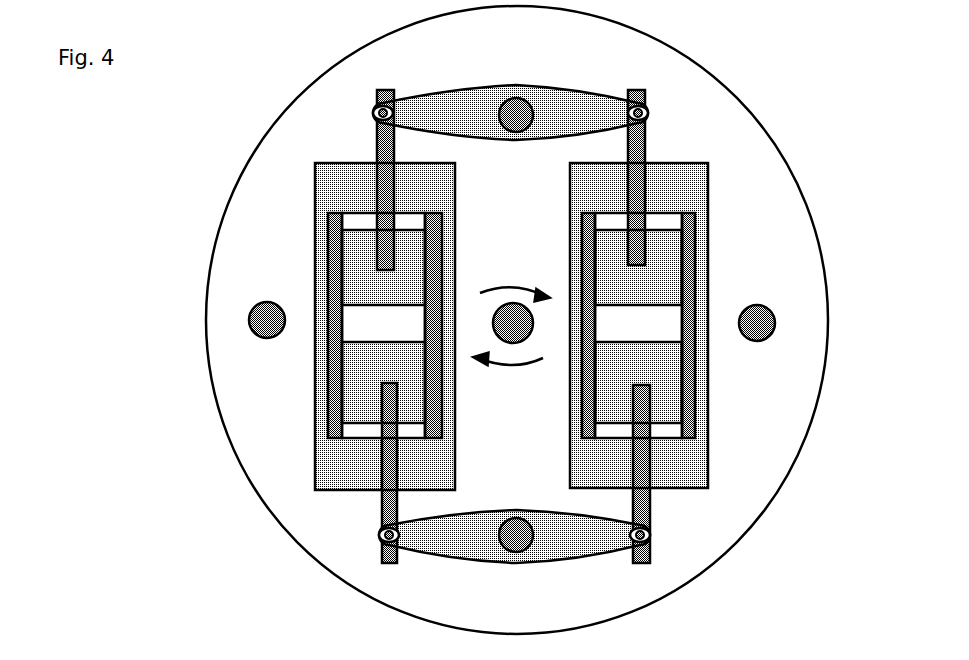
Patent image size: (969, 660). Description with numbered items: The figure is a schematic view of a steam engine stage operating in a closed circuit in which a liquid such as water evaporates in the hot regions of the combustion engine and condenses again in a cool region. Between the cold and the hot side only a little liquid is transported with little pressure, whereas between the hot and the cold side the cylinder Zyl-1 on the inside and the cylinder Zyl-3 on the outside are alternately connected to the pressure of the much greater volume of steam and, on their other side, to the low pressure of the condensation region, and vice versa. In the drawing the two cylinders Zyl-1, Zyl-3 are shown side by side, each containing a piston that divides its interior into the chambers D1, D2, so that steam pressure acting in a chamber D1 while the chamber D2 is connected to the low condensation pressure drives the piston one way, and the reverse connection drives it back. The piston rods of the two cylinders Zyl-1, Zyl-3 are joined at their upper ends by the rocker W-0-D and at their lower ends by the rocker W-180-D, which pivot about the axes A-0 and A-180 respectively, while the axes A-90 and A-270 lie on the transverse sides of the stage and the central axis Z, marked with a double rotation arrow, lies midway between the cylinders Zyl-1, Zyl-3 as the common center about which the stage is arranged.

The inner cylinder Zyl-1 is at (376, 326).
The outer cylinder Zyl-3 is at (655, 326).
The first pressure chamber D1 is at (497, 327).
The second pressure chamber D2 is at (531, 327).
The rocker arm at 0 degrees W-0-D is at (510, 129).
The rocker arm at 180 degrees W-180-D is at (514, 522).
The pivot axis at 0 degrees A-0 is at (515, 90).
The pivot axis at 90 degrees A-90 is at (762, 305).
The pivot axis at 180 degrees A-180 is at (512, 559).
The pivot axis at 270 degrees A-270 is at (263, 304).
The central rotation axis Z is at (511, 350).